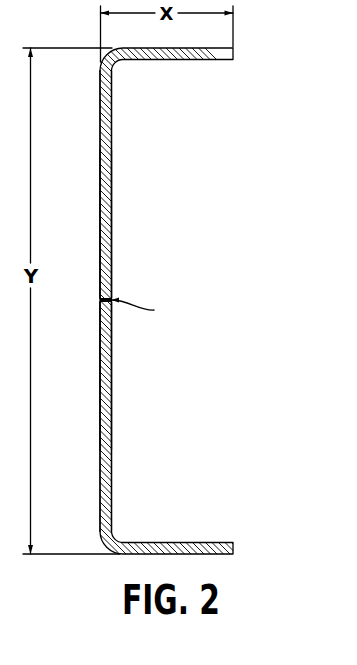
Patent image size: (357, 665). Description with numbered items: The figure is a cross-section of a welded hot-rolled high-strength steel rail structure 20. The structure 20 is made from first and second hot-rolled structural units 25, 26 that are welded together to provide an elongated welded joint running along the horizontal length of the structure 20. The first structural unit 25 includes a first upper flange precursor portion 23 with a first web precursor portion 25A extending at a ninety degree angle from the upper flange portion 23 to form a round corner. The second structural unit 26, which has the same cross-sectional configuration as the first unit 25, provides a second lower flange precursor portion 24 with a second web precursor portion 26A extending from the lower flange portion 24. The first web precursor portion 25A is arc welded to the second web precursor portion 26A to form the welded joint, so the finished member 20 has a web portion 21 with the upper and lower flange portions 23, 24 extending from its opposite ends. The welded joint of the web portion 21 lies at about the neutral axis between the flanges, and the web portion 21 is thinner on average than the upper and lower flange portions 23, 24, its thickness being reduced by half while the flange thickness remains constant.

The hot-rolled high-strength rail structure 20 is at (178, 300).
The web portion 21 is at (112, 260).
The first upper flange precursor portion 23 is at (213, 60).
The second lower flange precursor portion 24 is at (218, 542).
The first structural unit 25 is at (112, 137).
The first web precursor portion 25A is at (112, 194).
The second structural unit 26 is at (112, 438).
The second web precursor portion 26A is at (112, 359).